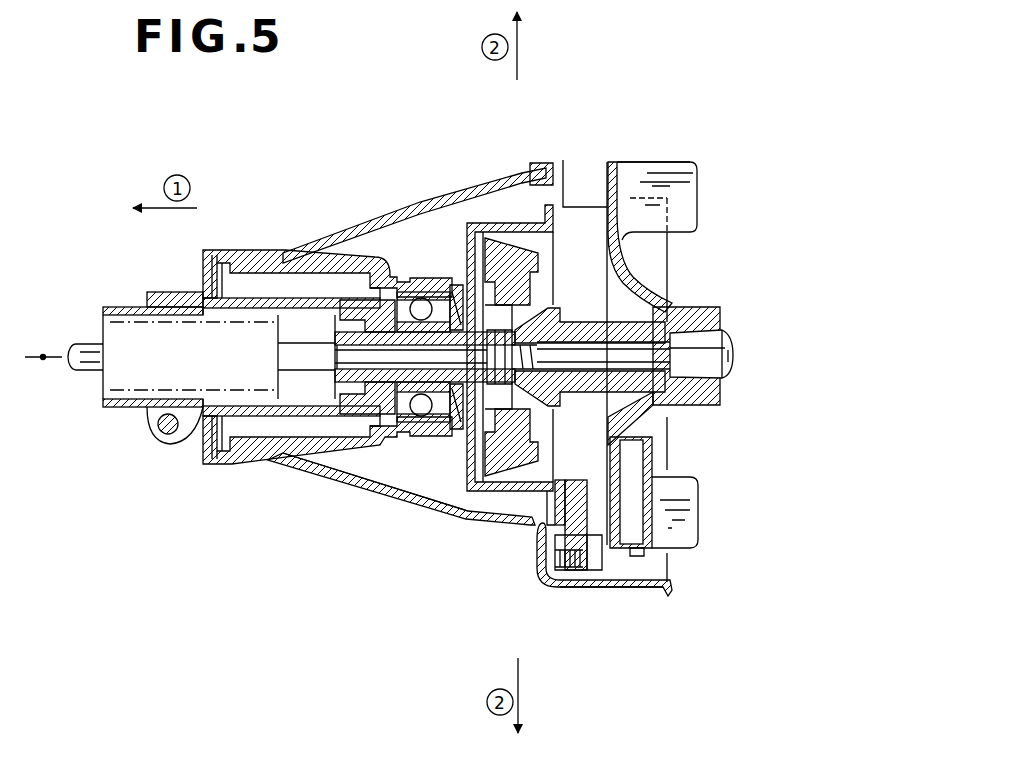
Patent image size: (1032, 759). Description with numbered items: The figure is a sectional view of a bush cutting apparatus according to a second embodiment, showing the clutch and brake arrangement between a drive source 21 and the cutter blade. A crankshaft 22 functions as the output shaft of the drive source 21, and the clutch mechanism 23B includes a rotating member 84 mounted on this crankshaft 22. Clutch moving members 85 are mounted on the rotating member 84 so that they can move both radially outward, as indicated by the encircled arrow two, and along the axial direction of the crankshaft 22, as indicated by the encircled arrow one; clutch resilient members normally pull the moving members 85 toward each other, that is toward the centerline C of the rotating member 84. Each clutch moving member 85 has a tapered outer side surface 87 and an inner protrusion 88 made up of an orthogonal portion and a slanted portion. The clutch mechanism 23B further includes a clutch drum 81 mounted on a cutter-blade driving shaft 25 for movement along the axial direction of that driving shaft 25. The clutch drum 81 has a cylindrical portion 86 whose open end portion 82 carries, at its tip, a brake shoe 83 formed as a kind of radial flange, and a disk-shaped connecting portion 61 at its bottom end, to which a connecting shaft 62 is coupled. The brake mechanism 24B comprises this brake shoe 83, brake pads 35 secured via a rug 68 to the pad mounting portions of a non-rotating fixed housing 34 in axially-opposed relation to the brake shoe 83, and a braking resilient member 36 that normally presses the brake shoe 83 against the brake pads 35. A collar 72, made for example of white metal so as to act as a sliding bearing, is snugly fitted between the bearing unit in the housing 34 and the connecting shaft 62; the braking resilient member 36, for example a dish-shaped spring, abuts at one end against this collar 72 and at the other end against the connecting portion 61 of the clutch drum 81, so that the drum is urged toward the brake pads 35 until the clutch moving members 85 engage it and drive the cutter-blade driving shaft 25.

The drive source 21 is at (748, 152).
The crankshaft 22 is at (730, 332).
The clutch mechanism 23B is at (620, 255).
The brake mechanism 24B is at (435, 503).
The cutter-blade driving shaft 25 is at (88, 323).
The housing 34 is at (573, 592).
The brake pads 35 is at (535, 525).
The braking resilient member 36 is at (385, 460).
The connecting portion 61 is at (425, 292).
The connecting shaft 62 is at (372, 300).
The rug 68 is at (590, 525).
The collar 72 is at (446, 295).
The clutch drum 81 is at (476, 500).
The open end portion 82 is at (527, 498).
The brake shoe 83 is at (543, 510).
The rotating member 84 is at (580, 316).
The clutch moving members 85 is at (472, 255).
The cylindrical portion 86 is at (456, 493).
The tapered outer side surface 87 is at (498, 205).
The inner protrusion 88 is at (562, 308).
The centerline C is at (43, 360).